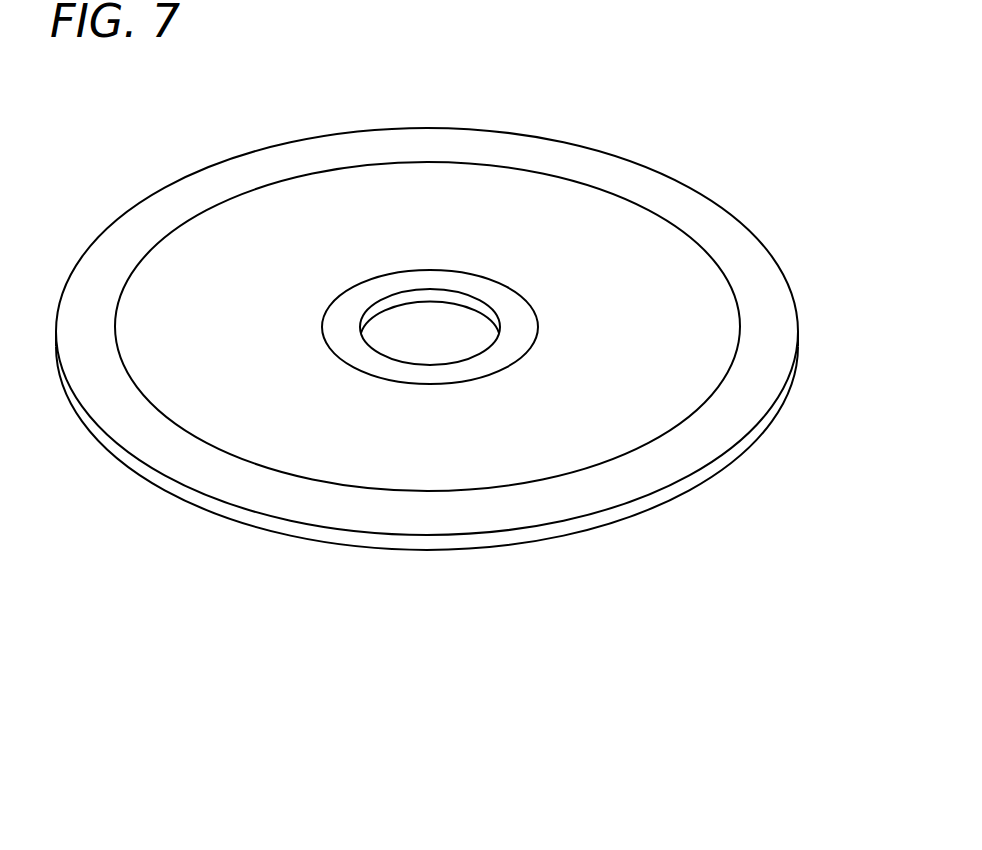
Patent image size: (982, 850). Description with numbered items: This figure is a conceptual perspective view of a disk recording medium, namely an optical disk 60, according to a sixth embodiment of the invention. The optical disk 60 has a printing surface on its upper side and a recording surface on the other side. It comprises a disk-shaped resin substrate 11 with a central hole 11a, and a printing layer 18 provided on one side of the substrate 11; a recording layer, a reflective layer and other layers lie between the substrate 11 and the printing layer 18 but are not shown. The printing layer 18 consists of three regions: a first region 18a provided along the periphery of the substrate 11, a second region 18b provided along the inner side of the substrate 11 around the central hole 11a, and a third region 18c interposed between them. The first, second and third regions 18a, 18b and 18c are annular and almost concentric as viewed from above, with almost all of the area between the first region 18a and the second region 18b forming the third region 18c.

The disk recording medium (optical disk) 60 is at (626, 128).
The printing layer 18 is at (798, 306).
The first region 18a is at (758, 273).
The second region 18b is at (454, 280).
The third region 18c is at (670, 272).
The substrate 11 is at (787, 403).
The central hole 11a is at (402, 318).